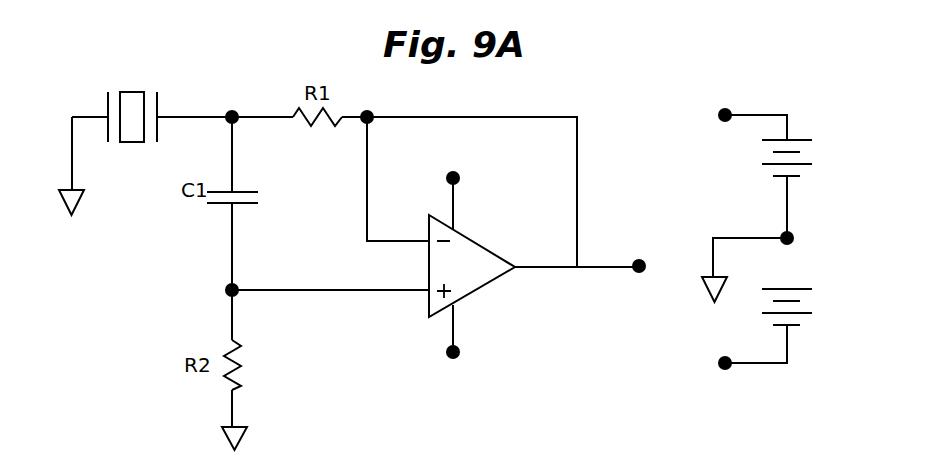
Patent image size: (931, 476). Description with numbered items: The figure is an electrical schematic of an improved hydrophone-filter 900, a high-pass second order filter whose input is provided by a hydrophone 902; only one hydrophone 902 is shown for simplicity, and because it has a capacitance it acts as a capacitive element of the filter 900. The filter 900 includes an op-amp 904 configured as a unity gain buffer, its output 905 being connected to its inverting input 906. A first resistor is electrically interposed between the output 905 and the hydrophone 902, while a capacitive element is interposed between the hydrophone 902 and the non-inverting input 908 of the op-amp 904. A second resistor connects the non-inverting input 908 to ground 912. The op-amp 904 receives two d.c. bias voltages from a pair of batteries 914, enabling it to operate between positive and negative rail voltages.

The hydrophone-filter 900 is at (515, 101).
The hydrophone 902 is at (106, 98).
The op-amp 904 is at (472, 265).
The output 905 is at (638, 275).
The inverting input 906 is at (400, 243).
The non-inverting input 908 is at (408, 293).
The ground 912 is at (248, 432).
The batteries 914 is at (738, 189).